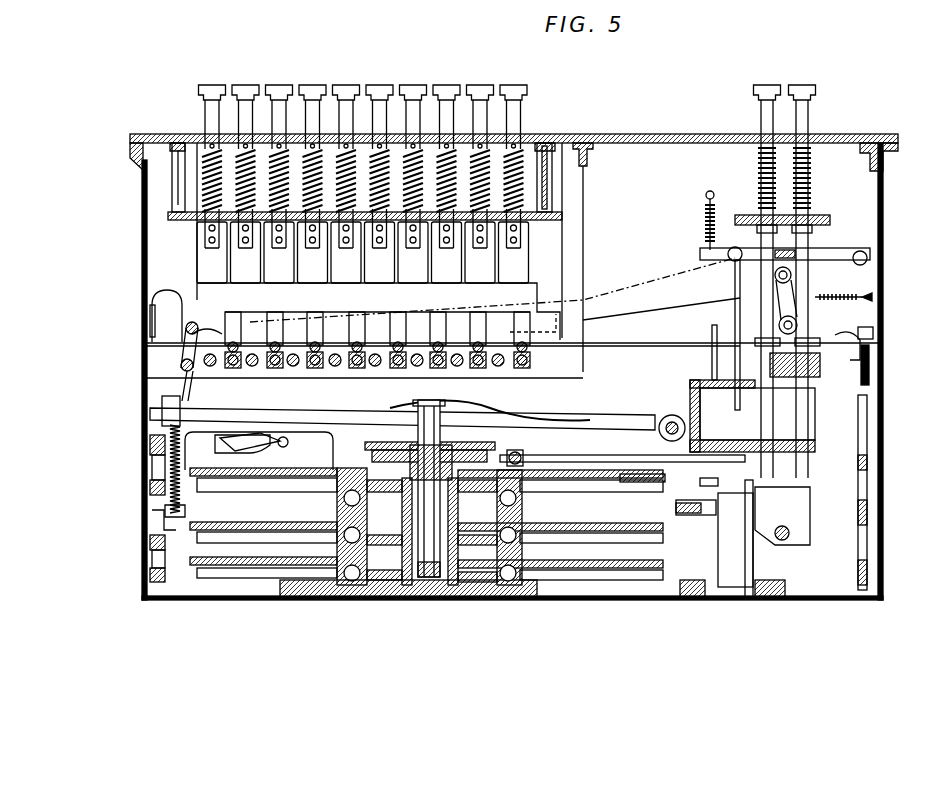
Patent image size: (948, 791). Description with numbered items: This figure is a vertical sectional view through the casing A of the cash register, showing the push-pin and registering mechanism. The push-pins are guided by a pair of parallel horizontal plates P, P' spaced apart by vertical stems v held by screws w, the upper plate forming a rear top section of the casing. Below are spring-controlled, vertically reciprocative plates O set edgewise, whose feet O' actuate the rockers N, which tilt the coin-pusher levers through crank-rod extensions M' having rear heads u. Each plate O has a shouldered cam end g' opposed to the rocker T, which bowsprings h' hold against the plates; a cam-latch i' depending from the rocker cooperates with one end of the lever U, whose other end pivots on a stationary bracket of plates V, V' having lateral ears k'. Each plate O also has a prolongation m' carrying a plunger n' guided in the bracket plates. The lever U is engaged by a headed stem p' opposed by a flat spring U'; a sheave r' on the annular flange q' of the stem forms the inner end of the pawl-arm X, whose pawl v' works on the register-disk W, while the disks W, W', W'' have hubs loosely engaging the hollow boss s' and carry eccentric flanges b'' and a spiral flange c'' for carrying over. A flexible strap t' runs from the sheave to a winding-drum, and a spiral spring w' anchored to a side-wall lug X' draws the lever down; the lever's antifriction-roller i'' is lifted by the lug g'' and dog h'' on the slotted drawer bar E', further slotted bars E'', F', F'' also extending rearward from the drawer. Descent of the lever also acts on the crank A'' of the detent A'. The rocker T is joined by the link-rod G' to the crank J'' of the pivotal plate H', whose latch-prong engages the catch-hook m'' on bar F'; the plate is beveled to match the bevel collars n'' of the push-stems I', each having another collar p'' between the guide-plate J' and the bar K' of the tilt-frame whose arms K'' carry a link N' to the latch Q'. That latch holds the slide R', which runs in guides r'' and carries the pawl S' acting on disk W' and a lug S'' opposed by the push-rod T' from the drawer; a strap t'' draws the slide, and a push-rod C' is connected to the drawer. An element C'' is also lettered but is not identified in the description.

The casing A is at (497, 350).
The upper guide-plate P is at (379, 216).
The lower guide-plate P' is at (393, 228).
The vertical stems v is at (357, 177).
The screws w is at (367, 121).
The plates O is at (373, 184).
The push-stems I' is at (802, 281).
The link-rod G' is at (492, 257).
The plate prolongation m' is at (661, 308).
The feet O' is at (376, 319).
The rear heads u is at (532, 362).
The bowsprings h' is at (167, 297).
The shouldered cam end g' is at (201, 315).
The rocker T is at (147, 358).
The cam-latch i' is at (146, 381).
The antifriction-roller i'' is at (202, 399).
The lug g'' is at (139, 409).
The dog h'' is at (101, 427).
The spiral spring w' is at (201, 471).
The slotted bar E' is at (130, 465).
The lug X' is at (136, 523).
The slotted bar E'' is at (131, 558).
The crank A'' is at (259, 451).
The detent A' is at (309, 455).
The lever U is at (402, 425).
The rockers N is at (461, 402).
The link N' is at (579, 323).
The crank-rod extensions M' is at (430, 380).
The annular flange q' is at (430, 433).
The sheave r' is at (408, 455).
The eccentric flanges b'' is at (296, 524).
The spiral flange c'' is at (297, 552).
The headed stem p' is at (430, 492).
The hollow boss s' is at (408, 611).
The push-rod C' is at (560, 505).
The toothed disk W' is at (542, 527).
The register-disk W is at (583, 447).
The toothed disk W'' is at (584, 605).
The plate C'' is at (653, 597).
The flexible strap t' is at (622, 447).
The flat spring U' is at (588, 398).
The pawl-arm X is at (620, 397).
The guide-plate J' is at (733, 288).
The lateral ears k' is at (668, 421).
The bracket plate V is at (743, 405).
The pivotal plate H' is at (825, 382).
The bracket plate V' is at (827, 434).
The slotted bar F' is at (844, 492).
The slotted bar F'' is at (840, 554).
The non-beveled collar p'' is at (789, 213).
The bar K' is at (785, 249).
The spring-controlled arms K'' is at (695, 249).
The plunger n' is at (711, 335).
The crank J'' is at (799, 322).
The bevel collars n'' is at (789, 303).
The catch-hook m'' is at (886, 356).
The slide R' is at (759, 539).
The latch Q' is at (801, 516).
The lug S'' is at (772, 523).
The pawl S' is at (683, 500).
The pawl v' is at (657, 485).
The guides r'' is at (741, 608).
The flexible strap t'' is at (742, 620).
The push-rod T' is at (858, 533).